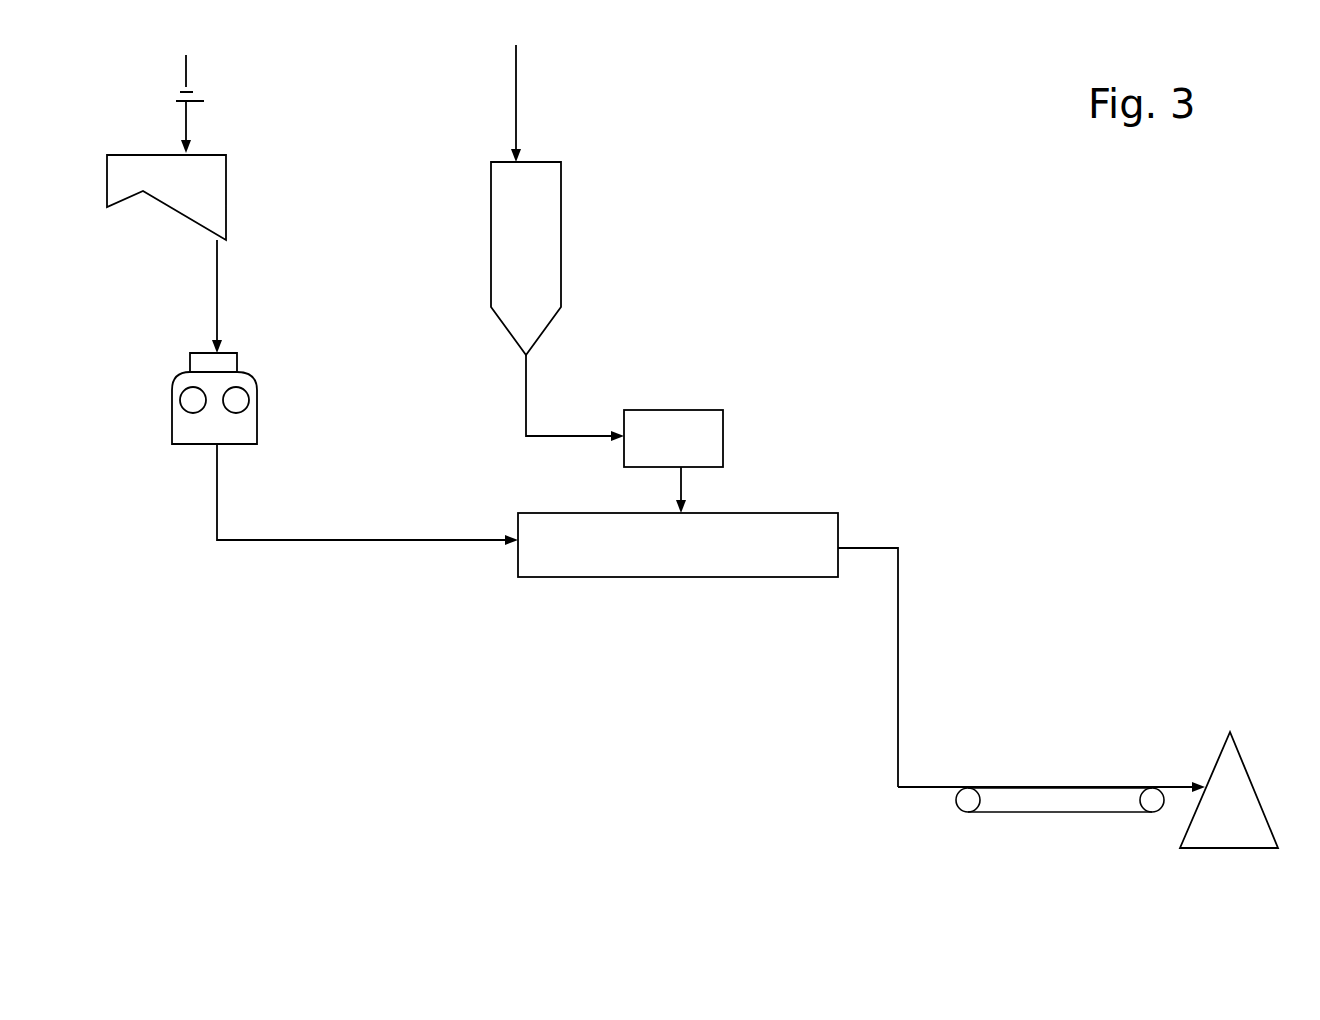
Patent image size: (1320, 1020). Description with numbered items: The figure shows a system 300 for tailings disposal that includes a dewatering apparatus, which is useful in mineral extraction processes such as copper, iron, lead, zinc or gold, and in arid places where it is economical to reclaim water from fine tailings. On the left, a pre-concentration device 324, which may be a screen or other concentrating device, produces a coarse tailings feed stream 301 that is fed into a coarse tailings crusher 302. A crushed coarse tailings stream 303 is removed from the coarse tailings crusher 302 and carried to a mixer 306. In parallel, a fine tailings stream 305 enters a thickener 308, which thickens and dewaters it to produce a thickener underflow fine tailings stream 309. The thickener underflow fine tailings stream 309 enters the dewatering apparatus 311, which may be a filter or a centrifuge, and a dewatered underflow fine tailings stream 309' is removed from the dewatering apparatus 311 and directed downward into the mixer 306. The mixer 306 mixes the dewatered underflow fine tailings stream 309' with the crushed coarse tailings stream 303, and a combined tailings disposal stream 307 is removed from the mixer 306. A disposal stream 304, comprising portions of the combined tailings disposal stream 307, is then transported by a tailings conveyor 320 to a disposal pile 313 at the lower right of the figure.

The system 300 is at (863, 235).
The pre-concentration device 324 is at (139, 155).
The coarse tailings feed stream 301 is at (216, 273).
The coarse tailings crusher 302 is at (258, 399).
The crushed coarse tailings stream 303 is at (348, 540).
The fine tailings stream 305 is at (517, 108).
The thickener 308 is at (492, 269).
The thickener underflow fine tailings stream 309 is at (575, 398).
The dewatering apparatus 311 is at (713, 410).
The dewatered underflow fine tailings stream 309' is at (753, 485).
The mixer 306 is at (682, 577).
The combined tailings disposal stream 307 is at (880, 545).
The disposal stream 304 is at (930, 790).
The tailings conveyor 320 is at (1050, 812).
The disposal pile 313 is at (1255, 785).